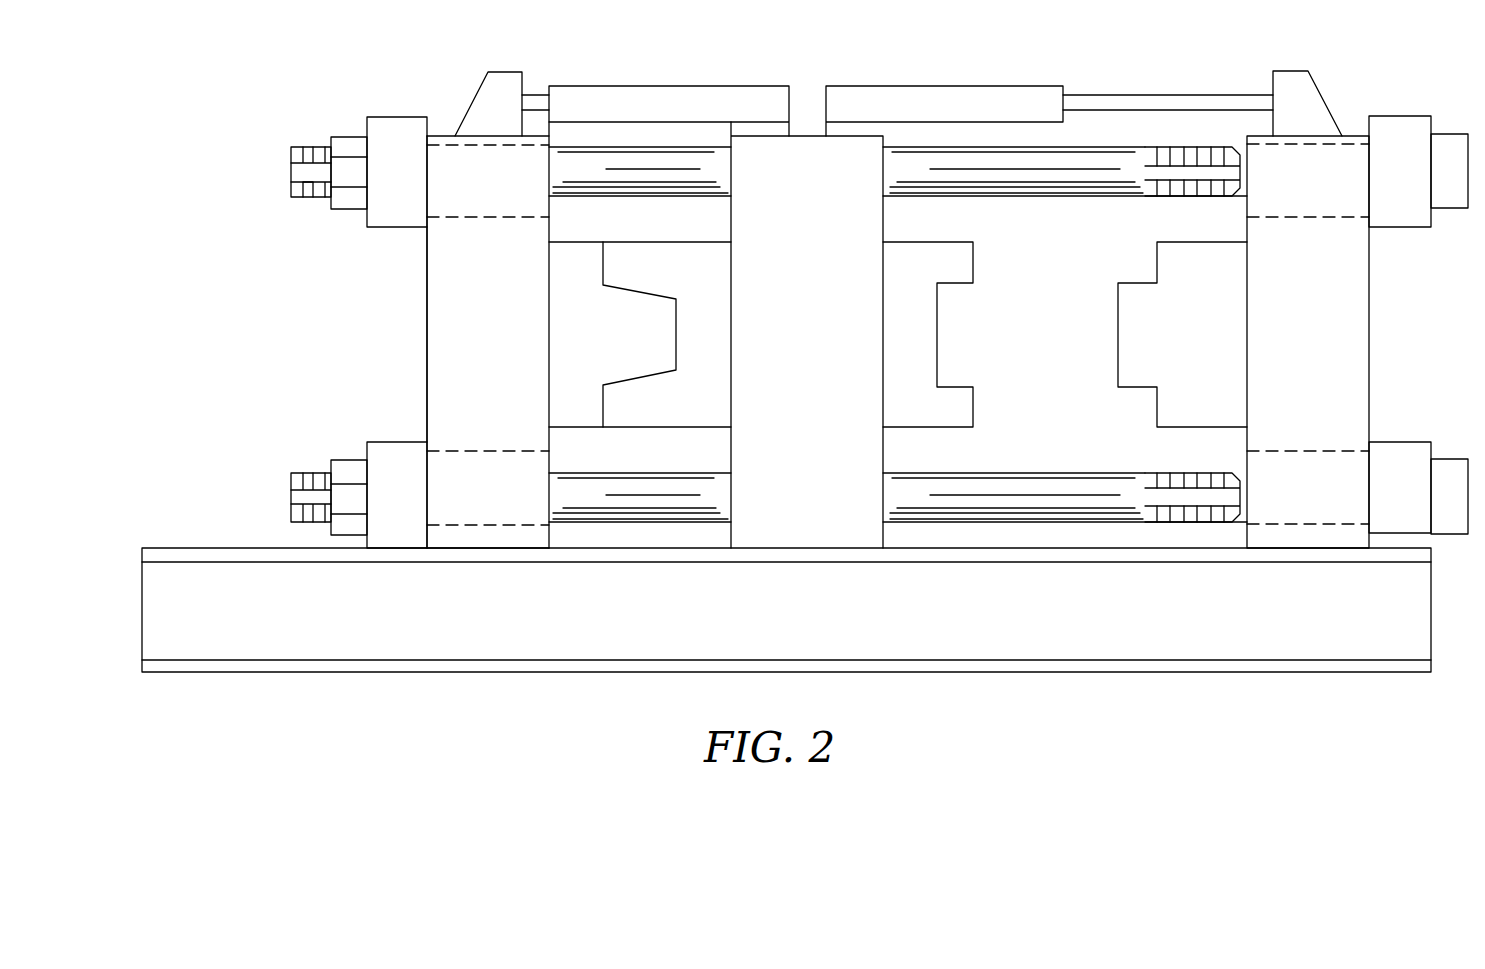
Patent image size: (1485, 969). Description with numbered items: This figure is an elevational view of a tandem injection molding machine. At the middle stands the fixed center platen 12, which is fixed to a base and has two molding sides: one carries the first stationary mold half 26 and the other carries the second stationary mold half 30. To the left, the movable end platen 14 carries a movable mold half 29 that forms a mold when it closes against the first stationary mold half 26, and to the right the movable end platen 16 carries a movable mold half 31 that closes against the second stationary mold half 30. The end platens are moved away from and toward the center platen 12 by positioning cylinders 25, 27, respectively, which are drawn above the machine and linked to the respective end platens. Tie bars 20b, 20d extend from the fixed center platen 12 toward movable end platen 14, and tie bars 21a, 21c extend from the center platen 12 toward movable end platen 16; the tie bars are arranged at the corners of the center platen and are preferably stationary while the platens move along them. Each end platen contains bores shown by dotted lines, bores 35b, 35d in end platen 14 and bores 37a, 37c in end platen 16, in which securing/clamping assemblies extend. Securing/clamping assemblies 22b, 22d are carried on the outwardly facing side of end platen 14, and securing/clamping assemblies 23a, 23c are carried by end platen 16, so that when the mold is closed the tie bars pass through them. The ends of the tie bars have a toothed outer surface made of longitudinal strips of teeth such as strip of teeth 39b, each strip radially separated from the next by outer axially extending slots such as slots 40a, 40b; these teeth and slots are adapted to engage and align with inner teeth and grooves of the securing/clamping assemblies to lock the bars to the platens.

The fixed center platen 12 is at (828, 392).
The movable end platen 14 is at (492, 377).
The movable end platen 16 is at (1315, 365).
The movable mold half 29 is at (592, 357).
The first stationary mold half 26 is at (706, 284).
The second stationary mold half 30 is at (948, 265).
The movable mold half 31 is at (1167, 269).
The tie bar 21a is at (1120, 147).
The tie bar 21c is at (1042, 488).
The positioning cylinder 25 is at (727, 93).
The positioning cylinder 27 is at (897, 92).
The bore 35b is at (460, 145).
The bore 35d is at (458, 525).
The bore 37a is at (1340, 145).
The bore 37c is at (1313, 524).
The securing/clamping assembly 22b is at (396, 126).
The securing/clamping assembly 22d is at (392, 450).
The tie bar 20b is at (304, 197).
The tie bar 20d is at (305, 473).
The outer axially extending slot 40b is at (308, 170).
The outer axially extending slot 40a is at (302, 498).
The strip of teeth 39b is at (305, 187).
The securing/clamping assembly 23a is at (1408, 203).
The securing/clamping assembly 23c is at (1407, 445).